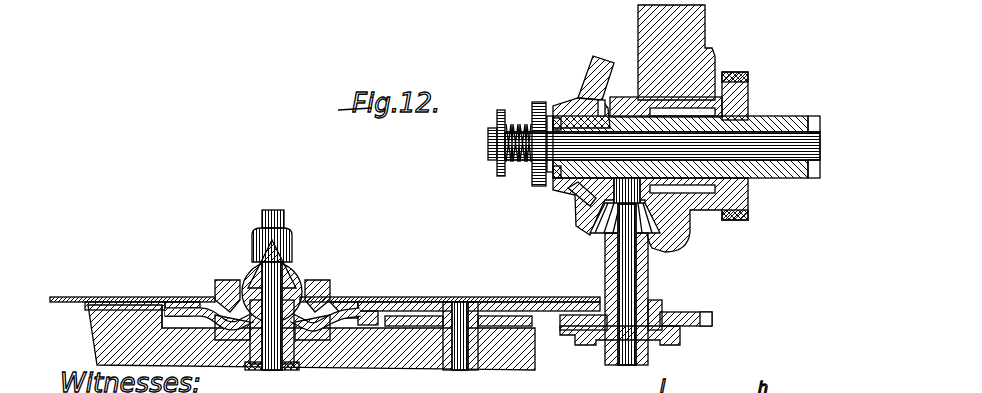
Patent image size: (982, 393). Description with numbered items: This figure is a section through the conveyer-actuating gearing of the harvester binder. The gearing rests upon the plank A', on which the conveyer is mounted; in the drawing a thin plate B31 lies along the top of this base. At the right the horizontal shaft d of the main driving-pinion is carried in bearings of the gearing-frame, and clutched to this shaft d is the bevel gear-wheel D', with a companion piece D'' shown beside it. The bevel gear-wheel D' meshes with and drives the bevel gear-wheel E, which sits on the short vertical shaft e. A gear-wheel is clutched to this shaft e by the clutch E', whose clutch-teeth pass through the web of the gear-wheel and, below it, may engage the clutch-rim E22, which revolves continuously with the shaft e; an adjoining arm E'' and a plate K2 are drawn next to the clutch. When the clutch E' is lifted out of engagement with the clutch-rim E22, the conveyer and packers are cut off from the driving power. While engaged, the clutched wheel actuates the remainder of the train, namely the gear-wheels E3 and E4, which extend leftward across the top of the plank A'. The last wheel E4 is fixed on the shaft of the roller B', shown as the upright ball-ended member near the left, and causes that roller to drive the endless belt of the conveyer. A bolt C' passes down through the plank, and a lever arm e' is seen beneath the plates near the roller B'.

The plank A' is at (311, 349).
The plate B31 is at (118, 298).
The gear-wheel E3 is at (394, 305).
The gear-wheel E4 is at (322, 305).
The bolt C' is at (492, 347).
The lever arm e' is at (377, 341).
The roller B' is at (272, 279).
The shaft d is at (745, 142).
The bevel gear-wheel D' is at (583, 75).
The lever arm D'' is at (564, 202).
The bevel gear-wheel E is at (606, 231).
The short vertical shaft e is at (639, 284).
The plate K2 is at (580, 316).
The clutch E' is at (680, 305).
The arm E'' is at (705, 312).
The clutch-rim E22 is at (642, 342).